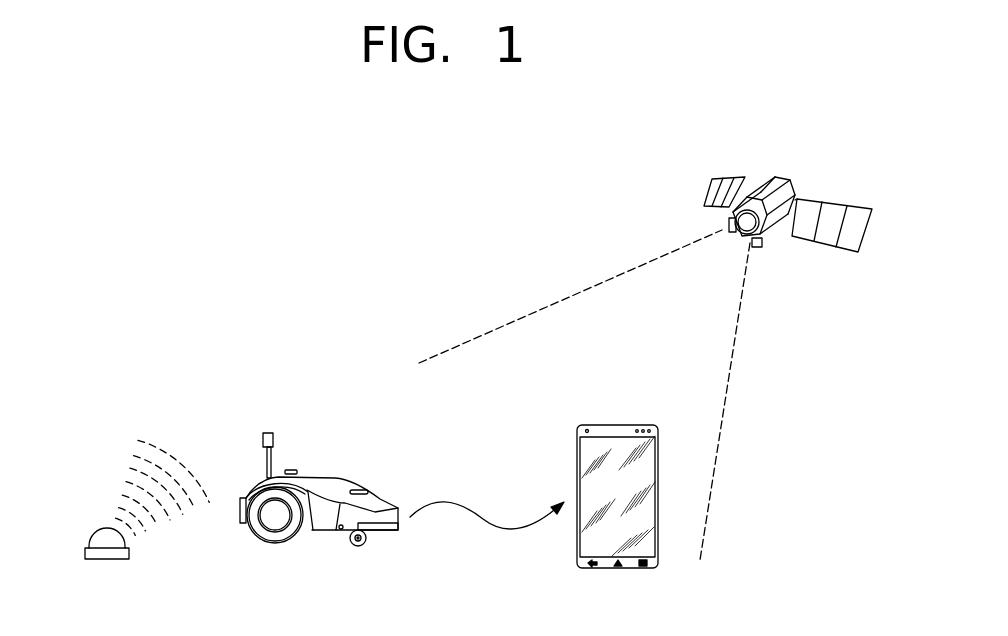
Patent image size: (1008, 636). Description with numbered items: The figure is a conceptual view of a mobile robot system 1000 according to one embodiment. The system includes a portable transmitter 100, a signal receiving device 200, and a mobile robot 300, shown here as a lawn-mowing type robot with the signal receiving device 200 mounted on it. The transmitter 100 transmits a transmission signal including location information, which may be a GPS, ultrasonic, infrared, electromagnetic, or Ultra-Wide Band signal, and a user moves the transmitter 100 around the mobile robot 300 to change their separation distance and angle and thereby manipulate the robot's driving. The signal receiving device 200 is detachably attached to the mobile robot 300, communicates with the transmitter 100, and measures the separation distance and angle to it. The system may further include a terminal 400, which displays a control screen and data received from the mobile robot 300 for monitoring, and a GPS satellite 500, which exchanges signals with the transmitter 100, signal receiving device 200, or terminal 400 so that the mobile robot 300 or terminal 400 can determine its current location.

The mobile robot system 1000 is at (376, 220).
The transmitter 100 is at (93, 538).
The signal receiving device 200 is at (270, 433).
The mobile robot 300 is at (309, 473).
The terminal 400 is at (618, 425).
The GPS satellite 500 is at (792, 185).